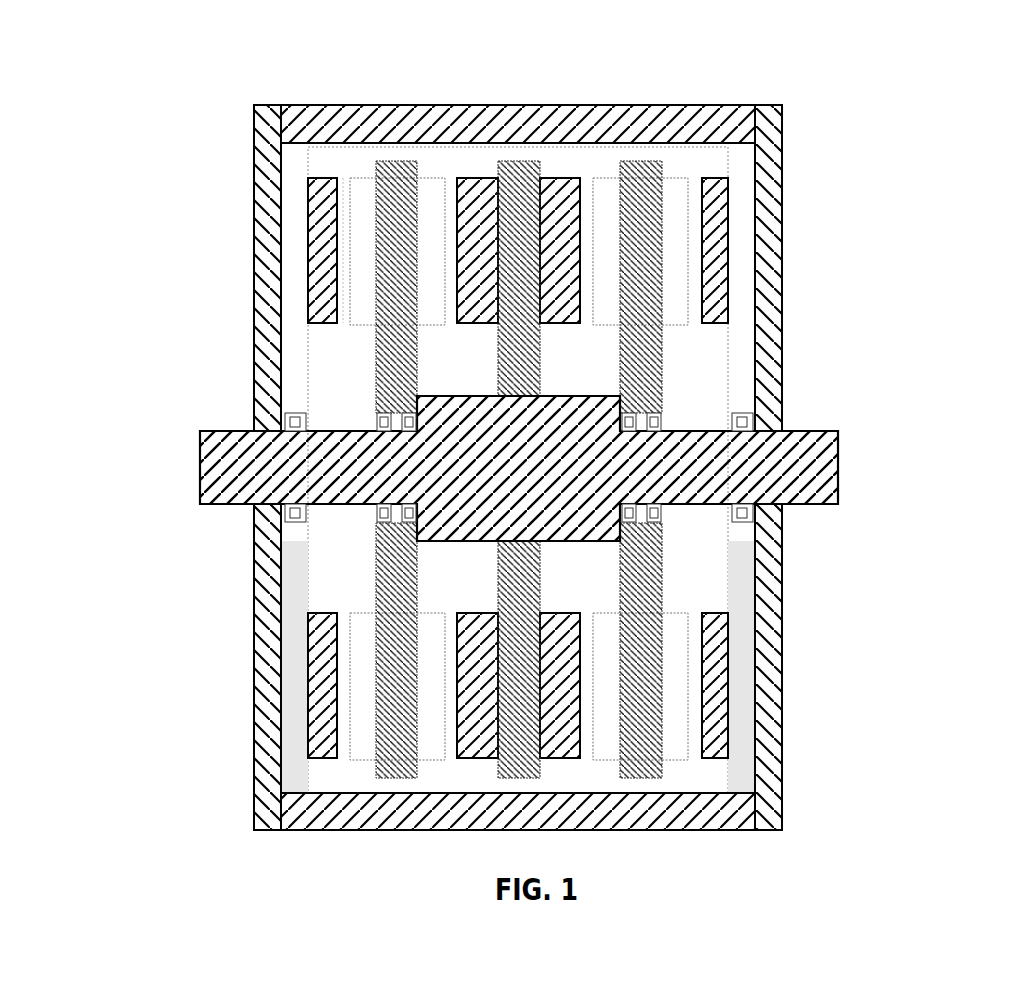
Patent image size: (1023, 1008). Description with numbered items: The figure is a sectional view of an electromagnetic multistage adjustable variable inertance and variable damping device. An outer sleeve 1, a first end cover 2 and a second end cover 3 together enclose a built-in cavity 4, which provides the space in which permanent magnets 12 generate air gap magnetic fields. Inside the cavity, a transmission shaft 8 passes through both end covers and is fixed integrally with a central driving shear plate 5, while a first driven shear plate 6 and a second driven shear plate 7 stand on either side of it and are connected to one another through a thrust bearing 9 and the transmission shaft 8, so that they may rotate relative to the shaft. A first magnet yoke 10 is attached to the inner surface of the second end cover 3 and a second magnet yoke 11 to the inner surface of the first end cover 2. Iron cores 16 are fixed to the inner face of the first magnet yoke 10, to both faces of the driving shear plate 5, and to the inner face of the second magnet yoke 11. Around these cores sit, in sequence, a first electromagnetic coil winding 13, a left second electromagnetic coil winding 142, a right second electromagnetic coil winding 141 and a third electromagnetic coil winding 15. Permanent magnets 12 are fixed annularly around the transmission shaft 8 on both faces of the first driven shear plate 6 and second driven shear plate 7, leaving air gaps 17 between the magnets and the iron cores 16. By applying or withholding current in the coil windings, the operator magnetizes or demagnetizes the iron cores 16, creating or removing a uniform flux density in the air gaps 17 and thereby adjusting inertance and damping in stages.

The outer sleeve 1 is at (703, 122).
The first end cover 2 is at (768, 245).
The second end cover 3 is at (265, 789).
The built-in cavity 4 is at (281, 177).
The driving shear plate 5 is at (523, 579).
The first driven shear plate 6 is at (402, 724).
The second driven shear plate 7 is at (643, 345).
The transmission shaft 8 is at (200, 458).
The thrust bearing 9 is at (743, 512).
The first magnet yoke 10 is at (295, 596).
The second magnet yoke 11 is at (737, 397).
The permanent magnet 12 is at (682, 688).
The first electromagnetic coil winding 13 is at (322, 218).
The right second electromagnetic coil winding 141 is at (557, 290).
The left second electromagnetic coil winding 142 is at (466, 300).
The third electromagnetic coil winding 15 is at (718, 192).
The iron core 16 is at (700, 628).
The air gap 17 is at (343, 233).